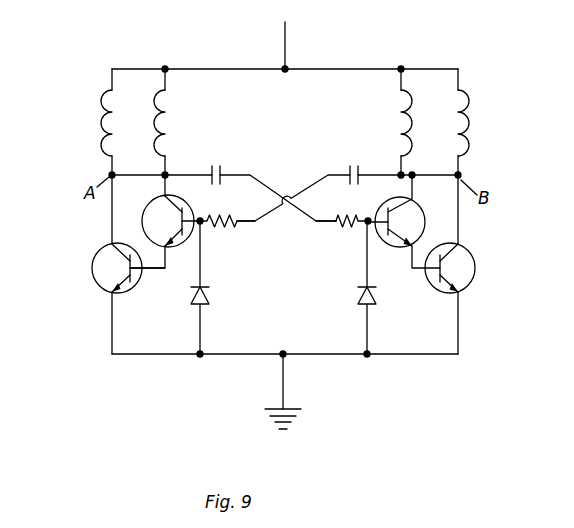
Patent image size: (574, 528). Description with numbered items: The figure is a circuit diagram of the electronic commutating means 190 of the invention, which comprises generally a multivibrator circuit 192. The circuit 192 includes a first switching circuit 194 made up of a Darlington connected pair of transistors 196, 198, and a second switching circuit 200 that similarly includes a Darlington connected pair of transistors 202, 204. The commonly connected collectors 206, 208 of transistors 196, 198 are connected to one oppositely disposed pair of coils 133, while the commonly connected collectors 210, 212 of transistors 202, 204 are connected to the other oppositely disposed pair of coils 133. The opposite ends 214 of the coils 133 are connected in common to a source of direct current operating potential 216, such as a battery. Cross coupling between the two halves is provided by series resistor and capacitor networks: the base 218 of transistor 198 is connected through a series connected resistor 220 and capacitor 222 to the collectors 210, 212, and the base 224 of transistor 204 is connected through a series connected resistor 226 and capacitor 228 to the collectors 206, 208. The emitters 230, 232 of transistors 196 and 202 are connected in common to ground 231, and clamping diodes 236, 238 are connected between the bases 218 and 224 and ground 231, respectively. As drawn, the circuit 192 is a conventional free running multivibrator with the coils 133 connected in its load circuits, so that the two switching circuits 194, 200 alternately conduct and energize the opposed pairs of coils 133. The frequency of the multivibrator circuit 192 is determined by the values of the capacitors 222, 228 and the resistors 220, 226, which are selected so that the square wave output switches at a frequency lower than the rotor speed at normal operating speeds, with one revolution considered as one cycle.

The electronic commutating means 190 is at (108, 367).
The multivibrator circuit 192 is at (446, 247).
The first switching circuit 194 is at (108, 248).
The transistor 196 is at (127, 284).
The transistor 198 is at (185, 237).
The second switching circuit 200 is at (470, 226).
The transistor 202 is at (440, 284).
The transistor 204 is at (399, 241).
The collector 206 is at (110, 244).
The collector 208 is at (167, 197).
The collector 210 is at (415, 222).
The collector 212 is at (413, 184).
The opposite ends of coils 214 is at (112, 69).
The source of direct current operating potential 216 is at (283, 23).
The base 218 is at (205, 216).
The resistor 220 is at (231, 226).
The capacitor 222 is at (349, 170).
The base 224 is at (357, 216).
The resistor 226 is at (339, 226).
The capacitor 228 is at (219, 170).
The emitter 230 is at (112, 296).
The ground 231 is at (288, 408).
The emitter 232 is at (460, 293).
The clamping diode 236 is at (210, 297).
The clamping diode 238 is at (358, 297).
The coils 133 is at (103, 110).